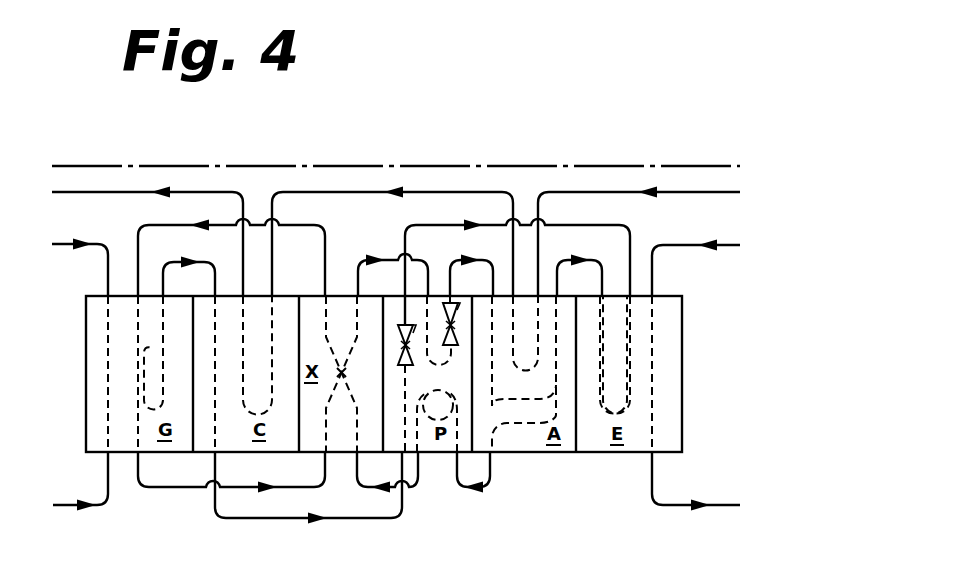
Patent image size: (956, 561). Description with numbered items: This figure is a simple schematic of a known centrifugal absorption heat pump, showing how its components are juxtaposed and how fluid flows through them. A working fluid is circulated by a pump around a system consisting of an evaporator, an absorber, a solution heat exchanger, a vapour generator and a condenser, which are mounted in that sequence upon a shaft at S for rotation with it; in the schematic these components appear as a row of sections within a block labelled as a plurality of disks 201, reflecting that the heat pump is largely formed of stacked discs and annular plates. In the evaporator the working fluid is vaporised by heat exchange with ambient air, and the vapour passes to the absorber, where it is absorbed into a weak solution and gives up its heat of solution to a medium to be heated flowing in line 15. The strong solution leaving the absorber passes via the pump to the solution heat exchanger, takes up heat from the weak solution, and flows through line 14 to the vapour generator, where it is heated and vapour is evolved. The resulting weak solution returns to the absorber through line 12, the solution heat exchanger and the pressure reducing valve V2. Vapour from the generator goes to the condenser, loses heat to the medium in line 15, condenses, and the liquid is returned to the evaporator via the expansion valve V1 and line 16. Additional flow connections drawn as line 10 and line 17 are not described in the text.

The feed conduit 10 is at (92, 248).
The line 12 is at (153, 488).
The line 14 is at (327, 226).
The line 15 is at (723, 192).
The line 16 is at (630, 228).
The conduit 17 is at (725, 245).
The plurality of disks 201 is at (683, 378).
The shaft S is at (490, 165).
The expansion valve V1 is at (400, 365).
The pressure reducing valve V2 is at (441, 293).